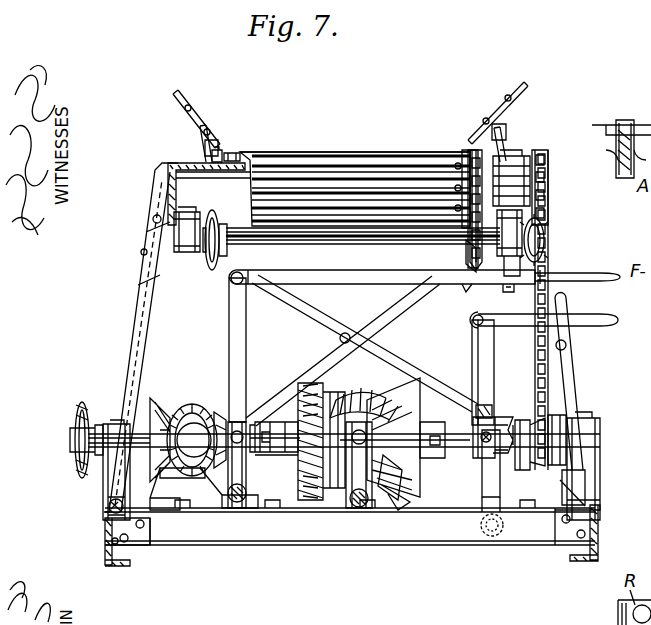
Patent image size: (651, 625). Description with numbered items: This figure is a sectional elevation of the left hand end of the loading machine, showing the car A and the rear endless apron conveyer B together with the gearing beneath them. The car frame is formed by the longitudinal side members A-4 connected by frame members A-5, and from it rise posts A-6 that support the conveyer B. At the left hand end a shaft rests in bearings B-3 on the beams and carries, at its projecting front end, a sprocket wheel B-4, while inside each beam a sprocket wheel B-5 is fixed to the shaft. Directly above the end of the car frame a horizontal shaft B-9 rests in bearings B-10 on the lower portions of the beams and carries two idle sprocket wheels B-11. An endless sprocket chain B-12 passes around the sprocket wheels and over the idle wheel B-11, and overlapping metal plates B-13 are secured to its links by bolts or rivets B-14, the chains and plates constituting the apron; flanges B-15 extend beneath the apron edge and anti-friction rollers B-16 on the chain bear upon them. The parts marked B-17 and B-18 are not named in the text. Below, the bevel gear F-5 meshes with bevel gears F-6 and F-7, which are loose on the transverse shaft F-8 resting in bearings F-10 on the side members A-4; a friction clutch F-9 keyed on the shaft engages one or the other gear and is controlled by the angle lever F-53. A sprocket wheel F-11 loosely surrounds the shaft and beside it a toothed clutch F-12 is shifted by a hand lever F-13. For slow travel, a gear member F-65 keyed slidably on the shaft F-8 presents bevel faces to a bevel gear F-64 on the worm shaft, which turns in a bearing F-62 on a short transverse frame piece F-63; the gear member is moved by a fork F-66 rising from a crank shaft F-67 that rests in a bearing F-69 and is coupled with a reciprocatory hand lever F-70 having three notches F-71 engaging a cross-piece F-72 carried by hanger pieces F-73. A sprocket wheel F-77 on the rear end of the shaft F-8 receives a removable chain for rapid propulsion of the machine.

The lever rod B-17 is at (186, 104).
The lever pivot bracket B-18 is at (214, 150).
The flange B-15 is at (198, 160).
The bearing B-3 is at (168, 170).
The anti-friction roller B-16 is at (217, 158).
The endless sprocket chain B-12 is at (230, 158).
The overlapping metal plate B-13 is at (291, 160).
The sprocket wheel B-5 is at (200, 176).
The horizontal shaft B-9 is at (292, 240).
The bearing B-10 is at (176, 246).
The idle sprocket wheel B-11 is at (222, 268).
The sprocket wheel B-4 is at (548, 186).
The bolt or rivet B-14 is at (548, 220).
The rear endless apron conveyer B is at (355, 137).
The car A is at (350, 558).
The longitudinal side member A-4 is at (108, 536).
The frame member A-5 is at (432, 538).
The post A-6 is at (138, 333).
The bevel gear F-5 is at (358, 402).
The bevel gear F-6 is at (382, 408).
The bevel gear F-7 is at (318, 380).
The transverse shaft F-8 is at (127, 422).
The friction clutch F-9 is at (410, 410).
The bearing F-10 is at (112, 420).
The sprocket wheel F-11 is at (590, 400).
The toothed clutch F-12 is at (500, 420).
The hand lever F-13 is at (478, 347).
The angle lever F-53 is at (362, 510).
The bearing F-62 is at (178, 478).
The short transverse frame piece F-63 is at (180, 508).
The bevel gear F-64 is at (176, 400).
The gear member F-65 is at (205, 396).
The fork F-66 is at (246, 466).
The crank shaft F-67 is at (243, 348).
The bearing F-69 is at (255, 505).
The reciprocatory hand lever F-70 is at (308, 280).
The notch F-71 is at (466, 284).
The cross-piece F-72 is at (508, 292).
The hanger piece F-73 is at (547, 260).
The sprocket wheel F-77 is at (75, 414).